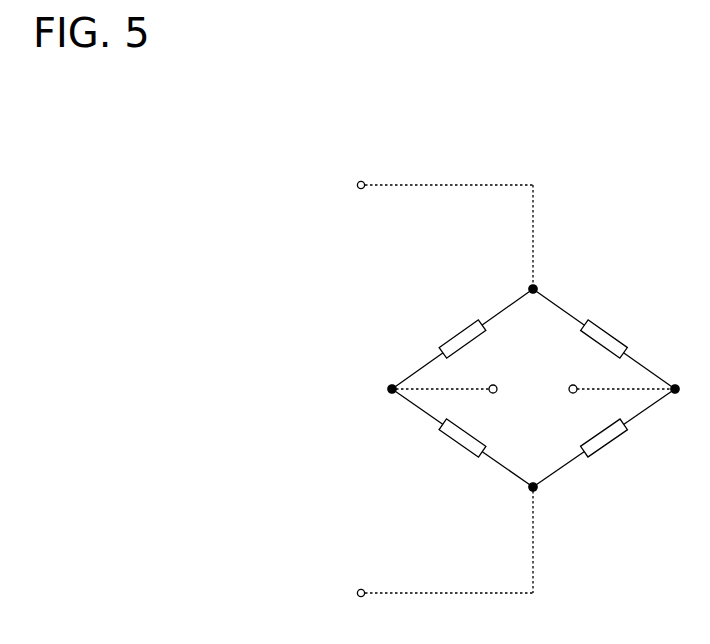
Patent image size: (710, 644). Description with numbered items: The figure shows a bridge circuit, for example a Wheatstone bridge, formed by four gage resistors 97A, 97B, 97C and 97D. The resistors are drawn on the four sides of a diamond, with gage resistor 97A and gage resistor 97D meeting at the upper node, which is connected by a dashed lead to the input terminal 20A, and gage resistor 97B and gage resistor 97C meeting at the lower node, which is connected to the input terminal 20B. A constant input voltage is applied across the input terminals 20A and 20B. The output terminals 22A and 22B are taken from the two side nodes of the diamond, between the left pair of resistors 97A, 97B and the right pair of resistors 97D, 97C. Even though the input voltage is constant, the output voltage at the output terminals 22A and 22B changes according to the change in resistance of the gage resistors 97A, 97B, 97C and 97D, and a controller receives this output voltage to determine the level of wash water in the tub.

The input terminal 20A is at (426, 229).
The input terminal 20B is at (426, 548).
The gage resistor 97A is at (456, 339).
The gage resistor 97B is at (455, 440).
The gage resistor 97C is at (612, 439).
The gage resistor 97D is at (612, 339).
The output terminal 22A is at (494, 393).
The output terminal 22B is at (572, 393).